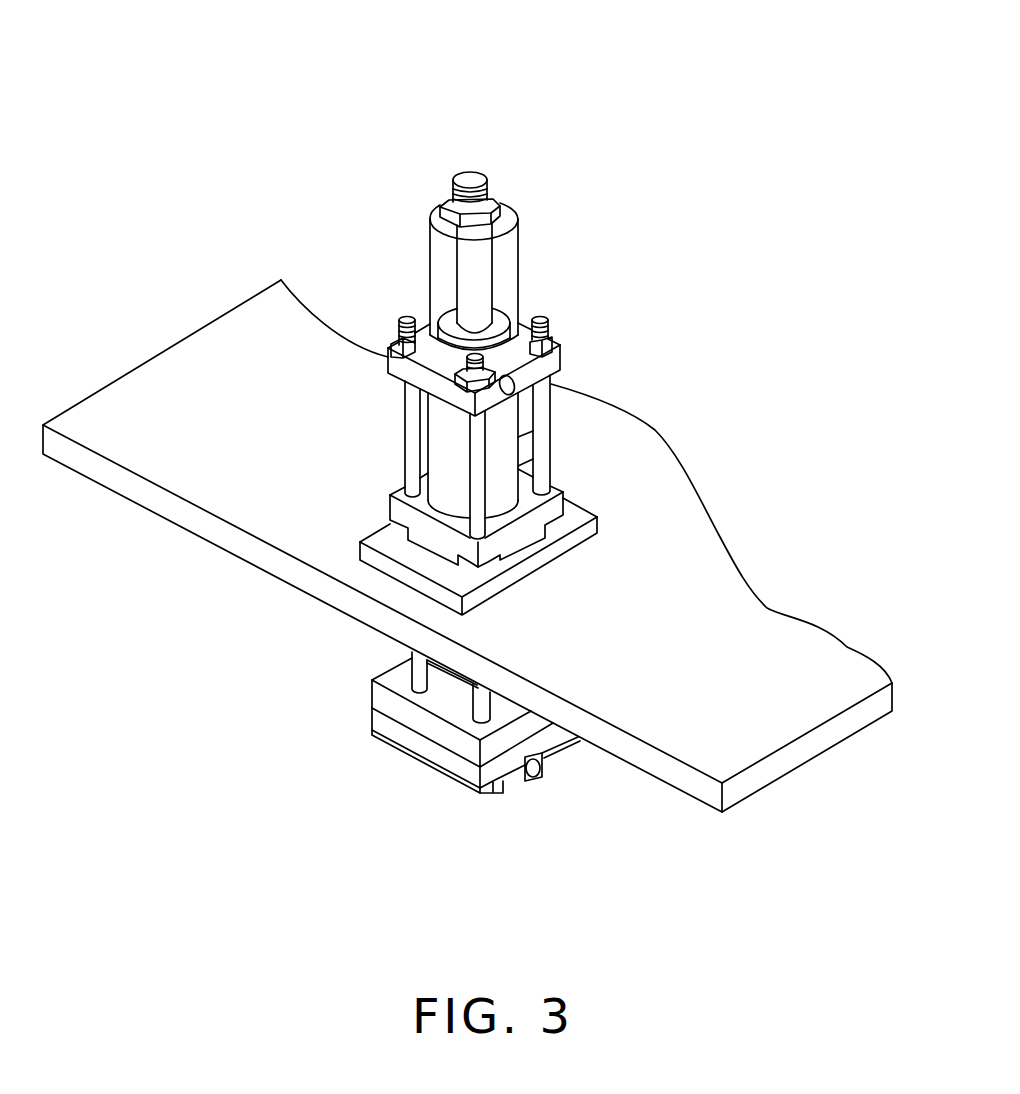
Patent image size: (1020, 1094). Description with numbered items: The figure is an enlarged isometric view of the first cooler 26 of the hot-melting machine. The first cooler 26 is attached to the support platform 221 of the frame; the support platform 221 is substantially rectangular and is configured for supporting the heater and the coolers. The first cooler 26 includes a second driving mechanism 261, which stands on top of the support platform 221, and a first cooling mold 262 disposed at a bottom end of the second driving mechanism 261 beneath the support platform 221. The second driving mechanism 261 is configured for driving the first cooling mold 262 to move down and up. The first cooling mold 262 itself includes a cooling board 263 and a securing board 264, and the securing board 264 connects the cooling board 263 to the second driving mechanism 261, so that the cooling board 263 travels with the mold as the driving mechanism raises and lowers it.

The first cooler 26 is at (470, 44).
The support platform 221 is at (738, 642).
The second driving mechanism 261 is at (500, 453).
The first cooling mold 262 is at (252, 755).
The cooling board 263 is at (373, 742).
The securing board 264 is at (435, 752).